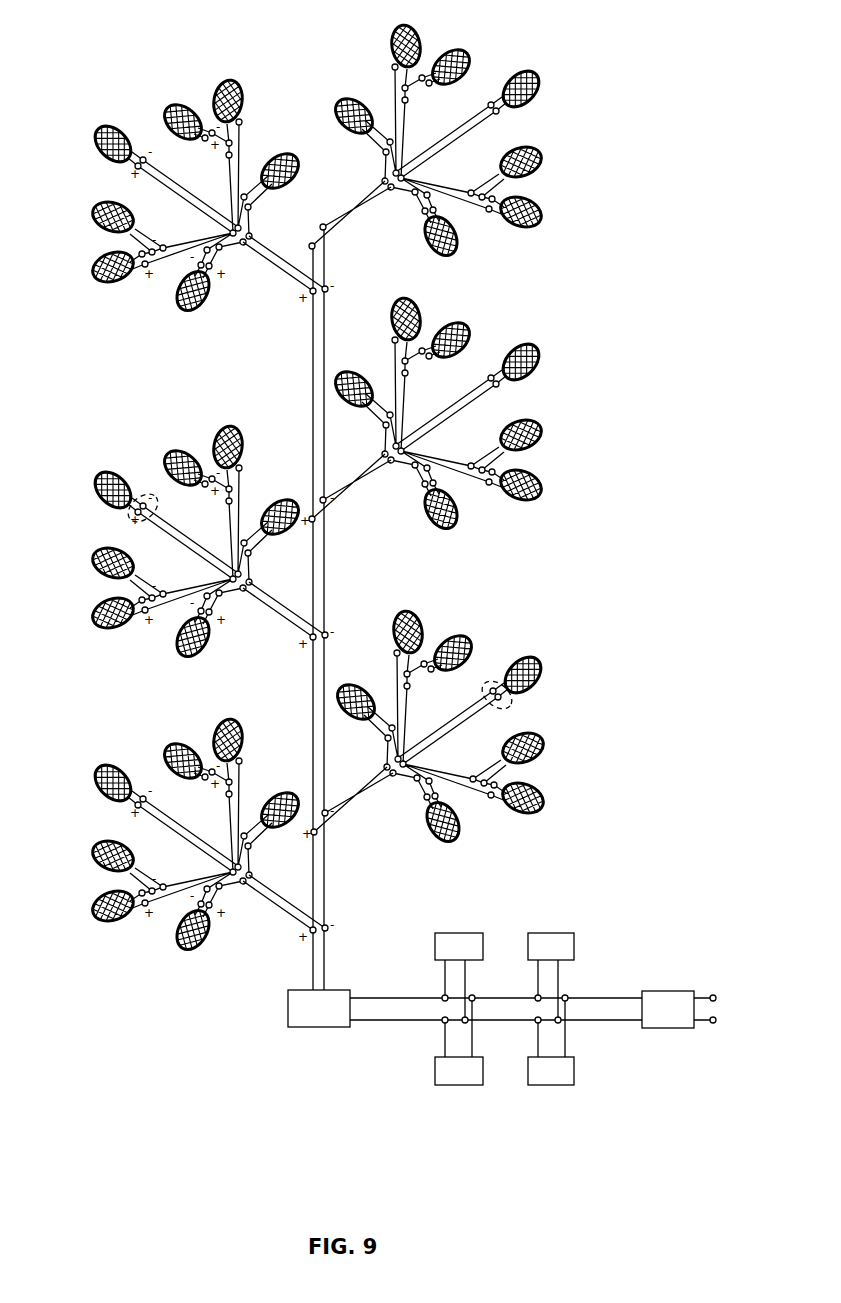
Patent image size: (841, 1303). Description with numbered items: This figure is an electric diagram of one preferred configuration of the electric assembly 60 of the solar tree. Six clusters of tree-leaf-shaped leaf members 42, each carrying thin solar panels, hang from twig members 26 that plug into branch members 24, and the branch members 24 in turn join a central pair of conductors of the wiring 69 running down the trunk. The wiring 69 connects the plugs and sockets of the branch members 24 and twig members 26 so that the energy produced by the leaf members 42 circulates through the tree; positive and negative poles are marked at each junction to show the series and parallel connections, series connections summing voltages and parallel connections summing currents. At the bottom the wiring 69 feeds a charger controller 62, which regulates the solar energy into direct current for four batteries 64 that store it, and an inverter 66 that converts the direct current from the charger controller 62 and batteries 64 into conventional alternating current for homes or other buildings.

The branch members 24 is at (356, 196).
The twig members 26 is at (165, 258).
The leaf members 42 is at (106, 468).
The wiring 69 is at (325, 343).
The electric assembly 60 is at (489, 1011).
The charger controller 62 is at (312, 1028).
The batteries 64 is at (456, 933).
The inverter 66 is at (667, 991).